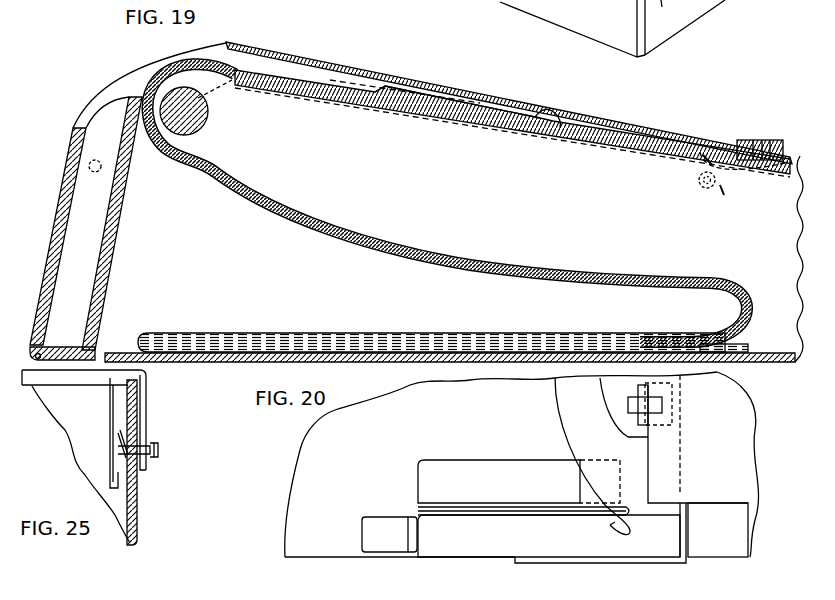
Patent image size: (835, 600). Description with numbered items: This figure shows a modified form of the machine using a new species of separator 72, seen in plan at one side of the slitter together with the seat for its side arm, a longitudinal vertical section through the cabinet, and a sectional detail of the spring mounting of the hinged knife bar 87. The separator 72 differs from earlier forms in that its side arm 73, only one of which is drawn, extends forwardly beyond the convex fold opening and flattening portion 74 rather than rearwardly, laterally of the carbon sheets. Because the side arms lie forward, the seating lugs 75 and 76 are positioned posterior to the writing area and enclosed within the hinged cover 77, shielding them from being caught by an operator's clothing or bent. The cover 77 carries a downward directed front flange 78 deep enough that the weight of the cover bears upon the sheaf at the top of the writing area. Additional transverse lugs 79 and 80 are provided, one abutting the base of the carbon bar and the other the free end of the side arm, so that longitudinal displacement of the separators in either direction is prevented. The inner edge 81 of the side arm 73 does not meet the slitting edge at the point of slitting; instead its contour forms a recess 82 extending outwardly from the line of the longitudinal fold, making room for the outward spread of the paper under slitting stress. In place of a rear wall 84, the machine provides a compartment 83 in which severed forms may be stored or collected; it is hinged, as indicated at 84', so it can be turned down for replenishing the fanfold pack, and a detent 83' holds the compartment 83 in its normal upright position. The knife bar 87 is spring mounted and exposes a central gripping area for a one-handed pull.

In FIG. 19, the separator 72 is at (400, 112).
In FIG. 20, the separator 72 is at (540, 400).
In FIG. 20, the side arm 73 is at (485, 548).
In FIG. 20, the convex fold opening and flattening portion 74 is at (566, 436).
In FIG. 20, the seating lug 75 is at (612, 566).
In FIG. 20, the seating lug 76 is at (550, 505).
In FIG. 19, the hinged cover 77 is at (378, 70).
In FIG. 19, the front flange 78 is at (556, 108).
In FIG. 20, the transverse lug 79 is at (690, 528).
In FIG. 20, the transverse lug 80 is at (410, 516).
In FIG. 20, the inner edge 81 is at (472, 505).
In FIG. 20, the recess 82 is at (612, 525).
In FIG. 19, the compartment 83 is at (126, 223).
In FIG. 19, the detent 83' is at (66, 146).
In FIG. 19, the outer wall 84 is at (55, 236).
In FIG. 19, the hinge 84' is at (56, 315).
In FIG. 19, the knife bar 87 is at (750, 140).
In FIG. 25, the knife bar 87 is at (83, 372).